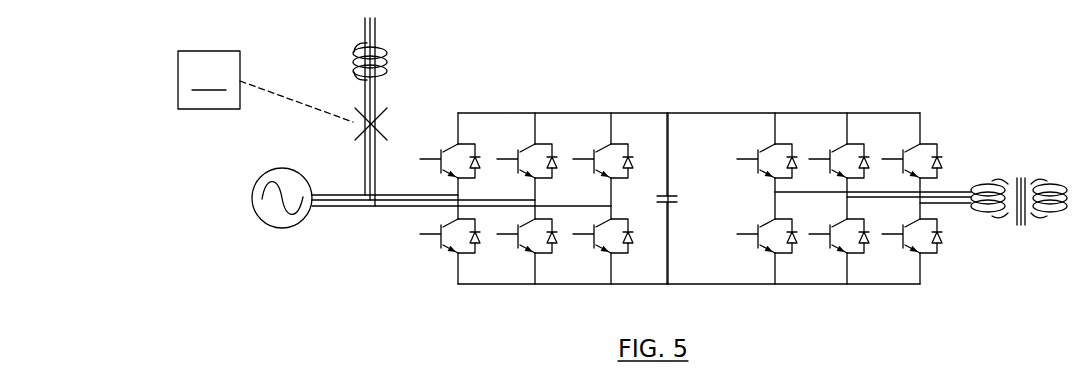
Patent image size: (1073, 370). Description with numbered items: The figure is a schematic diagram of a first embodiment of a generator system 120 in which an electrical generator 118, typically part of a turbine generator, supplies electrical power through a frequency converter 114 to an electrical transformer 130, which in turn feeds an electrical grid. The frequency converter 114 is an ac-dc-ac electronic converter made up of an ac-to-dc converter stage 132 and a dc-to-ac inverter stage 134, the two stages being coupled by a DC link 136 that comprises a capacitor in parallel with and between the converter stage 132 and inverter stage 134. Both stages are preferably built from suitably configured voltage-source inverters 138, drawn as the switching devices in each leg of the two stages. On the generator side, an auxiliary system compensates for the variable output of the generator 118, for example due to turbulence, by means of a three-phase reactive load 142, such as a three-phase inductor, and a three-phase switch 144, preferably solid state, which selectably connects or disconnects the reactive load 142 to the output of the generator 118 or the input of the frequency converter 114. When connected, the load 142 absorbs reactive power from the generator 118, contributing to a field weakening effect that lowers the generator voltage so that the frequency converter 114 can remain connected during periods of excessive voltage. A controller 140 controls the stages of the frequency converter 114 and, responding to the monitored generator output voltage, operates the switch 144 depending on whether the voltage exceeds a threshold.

The frequency converter 114 is at (718, 111).
The electrical generator 118 is at (266, 221).
The generator system 120 is at (948, 130).
The electrical transformer 130 is at (1021, 242).
The ac-to-dc converter stage 132 is at (481, 284).
The dc-to-ac inverter stage 134 is at (836, 285).
The DC link 136 is at (667, 262).
The voltage-source inverters 138 is at (556, 143).
The controller 140 is at (265, 86).
The 3-phase reactive load 142 is at (386, 53).
The switch 144 is at (384, 123).